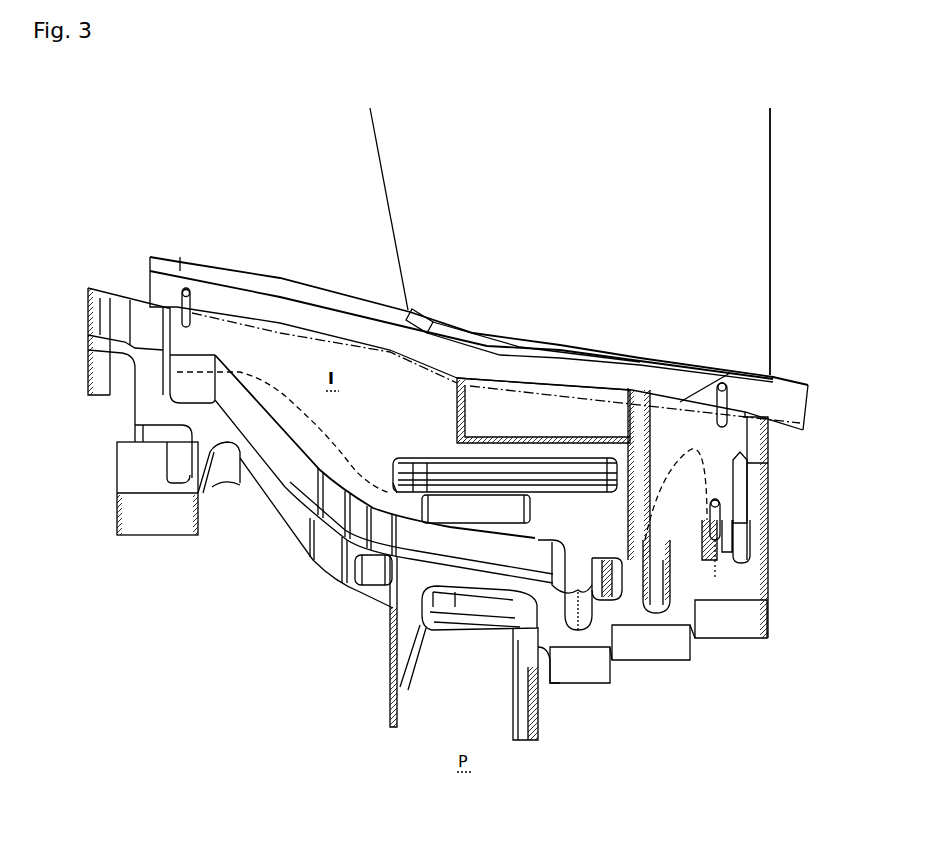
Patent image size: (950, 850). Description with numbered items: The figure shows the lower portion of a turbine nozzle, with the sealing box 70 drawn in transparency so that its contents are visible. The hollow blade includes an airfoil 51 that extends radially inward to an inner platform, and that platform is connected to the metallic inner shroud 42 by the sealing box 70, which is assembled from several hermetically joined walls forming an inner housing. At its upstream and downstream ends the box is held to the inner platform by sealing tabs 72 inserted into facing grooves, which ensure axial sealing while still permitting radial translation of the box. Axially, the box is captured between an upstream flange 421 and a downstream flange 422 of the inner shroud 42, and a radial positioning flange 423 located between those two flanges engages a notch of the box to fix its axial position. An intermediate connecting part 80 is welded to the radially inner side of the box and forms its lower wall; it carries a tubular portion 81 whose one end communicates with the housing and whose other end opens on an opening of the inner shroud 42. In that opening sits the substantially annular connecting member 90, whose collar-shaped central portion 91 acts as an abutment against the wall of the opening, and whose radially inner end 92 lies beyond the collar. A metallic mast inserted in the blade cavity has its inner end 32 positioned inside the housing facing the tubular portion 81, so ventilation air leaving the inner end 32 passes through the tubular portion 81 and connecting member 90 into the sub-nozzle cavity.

The sealing box 70 is at (308, 348).
The sealing tabs 72 is at (187, 286).
The inner end 32 is at (551, 405).
The airfoil 51 is at (740, 210).
The upstream flange 421 is at (162, 388).
The inner shroud 42 is at (300, 497).
The intermediate connecting part 80 is at (576, 478).
The tubular portion 81 is at (450, 517).
The central portion 91 is at (540, 535).
The downstream flange 422 is at (758, 481).
The radial positioning flange 423 is at (680, 512).
The connecting member 90 is at (453, 620).
The radially inner end 92 is at (493, 622).